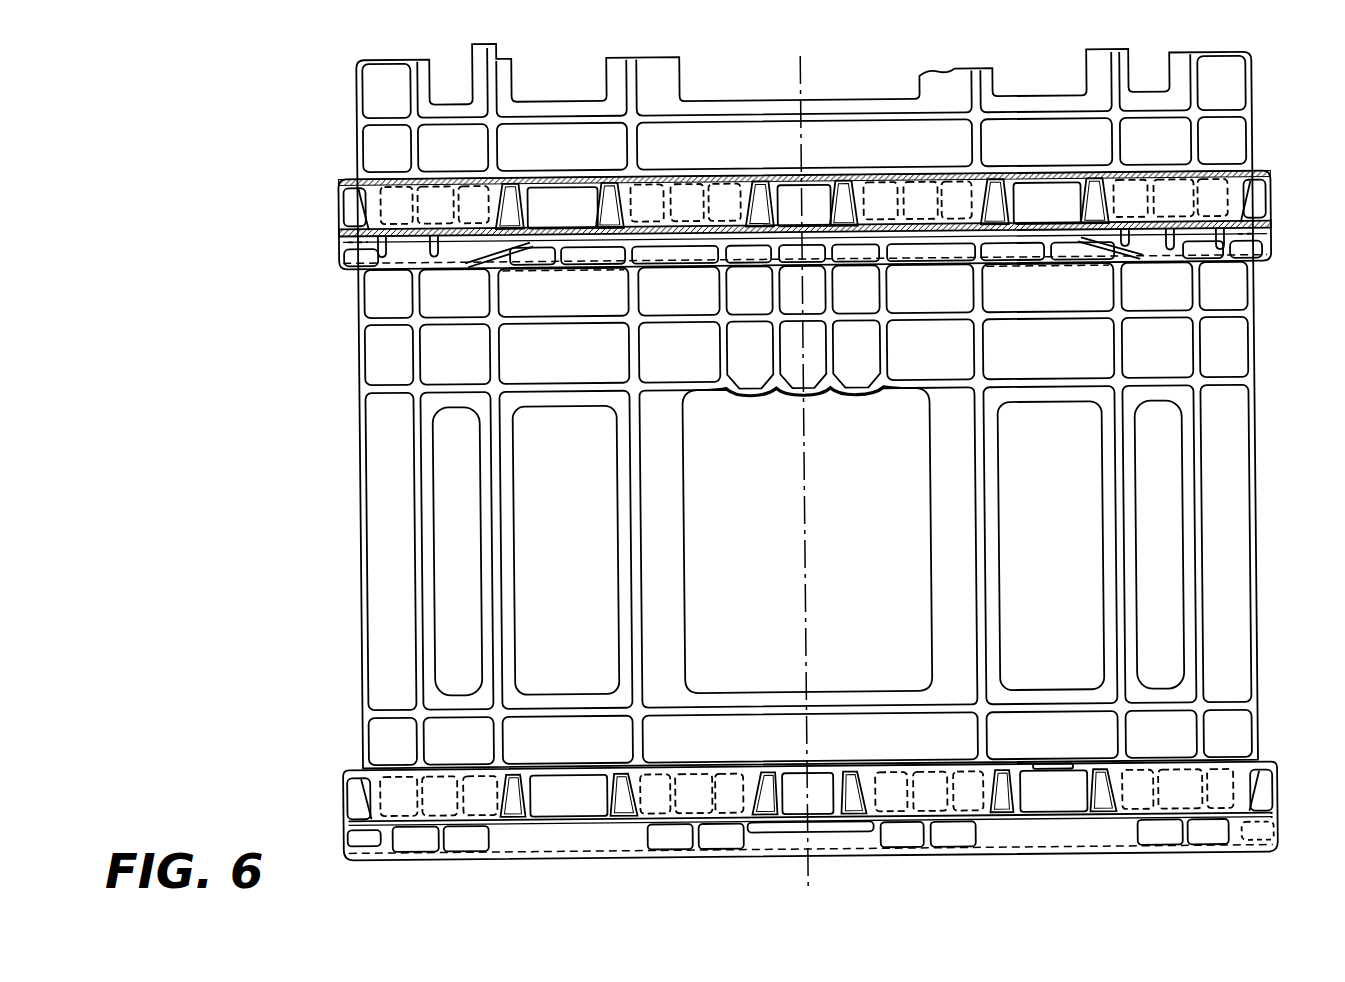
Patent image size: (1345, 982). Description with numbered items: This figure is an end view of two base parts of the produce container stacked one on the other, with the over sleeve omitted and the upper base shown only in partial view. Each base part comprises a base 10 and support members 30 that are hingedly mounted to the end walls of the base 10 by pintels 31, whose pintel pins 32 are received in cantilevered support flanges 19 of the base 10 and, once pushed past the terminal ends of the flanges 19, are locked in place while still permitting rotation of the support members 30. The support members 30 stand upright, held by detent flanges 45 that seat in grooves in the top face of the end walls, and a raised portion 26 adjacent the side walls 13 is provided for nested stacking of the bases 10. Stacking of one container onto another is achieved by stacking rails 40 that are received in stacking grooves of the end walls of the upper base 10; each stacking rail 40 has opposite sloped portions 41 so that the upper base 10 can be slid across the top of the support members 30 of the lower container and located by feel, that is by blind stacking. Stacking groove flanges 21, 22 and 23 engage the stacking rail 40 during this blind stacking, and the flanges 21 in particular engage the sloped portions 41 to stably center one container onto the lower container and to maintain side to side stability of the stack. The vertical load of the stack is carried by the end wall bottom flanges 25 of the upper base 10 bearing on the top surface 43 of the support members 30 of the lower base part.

The base 10 is at (1276, 796).
The side wall 13 is at (341, 800).
The cantilevered support flange 19 is at (497, 203).
The stacking groove flange 21 is at (1136, 261).
The stacking groove flange 22 is at (1201, 259).
The stacking groove flange 23 is at (1251, 266).
The end wall bottom flange 25 is at (418, 848).
The raised portion 26 is at (1276, 848).
The support member 30 is at (1250, 133).
The pintel 31 is at (449, 208).
The pintel pin 32 is at (343, 202).
The stacking rail 40 is at (666, 246).
The sloped portion 41 is at (476, 256).
The top surface 43 is at (356, 255).
The detent flange 45 is at (1059, 765).